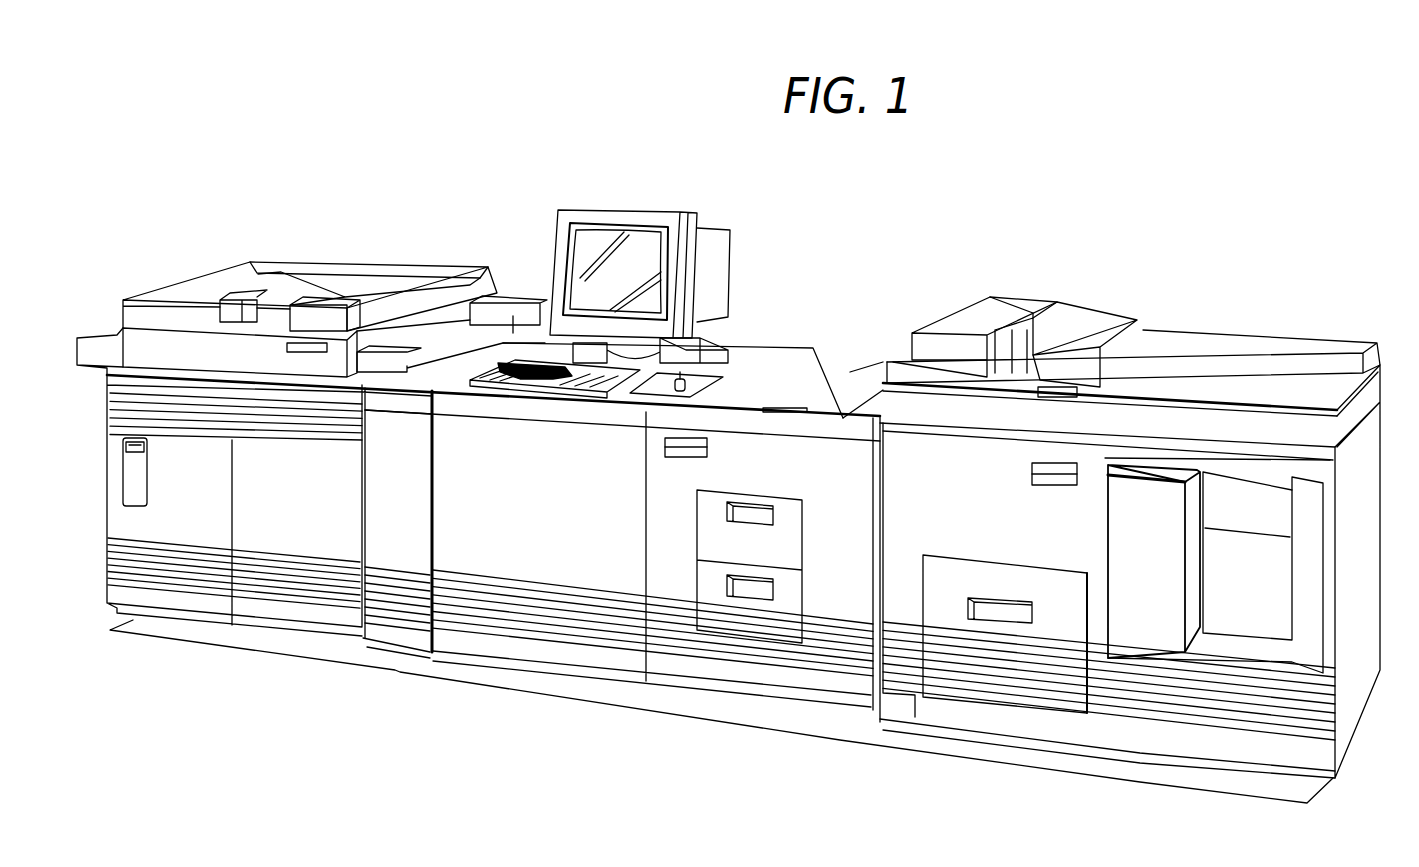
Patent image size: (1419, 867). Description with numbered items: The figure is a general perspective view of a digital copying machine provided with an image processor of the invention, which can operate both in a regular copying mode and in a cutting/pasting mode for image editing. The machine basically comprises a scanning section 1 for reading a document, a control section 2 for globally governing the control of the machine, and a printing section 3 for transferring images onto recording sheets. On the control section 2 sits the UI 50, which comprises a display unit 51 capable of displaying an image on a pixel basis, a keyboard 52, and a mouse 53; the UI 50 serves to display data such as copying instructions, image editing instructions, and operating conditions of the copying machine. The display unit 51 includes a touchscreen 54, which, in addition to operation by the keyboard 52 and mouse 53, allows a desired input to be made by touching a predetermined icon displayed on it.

The scanning section 1 is at (341, 257).
The control section 2 is at (845, 327).
The printing section 3 is at (1217, 326).
The UI 50 is at (646, 251).
The display unit 51 is at (723, 251).
The keyboard 52 is at (517, 388).
The mouse 53 is at (633, 393).
The touchscreen 54 is at (580, 243).